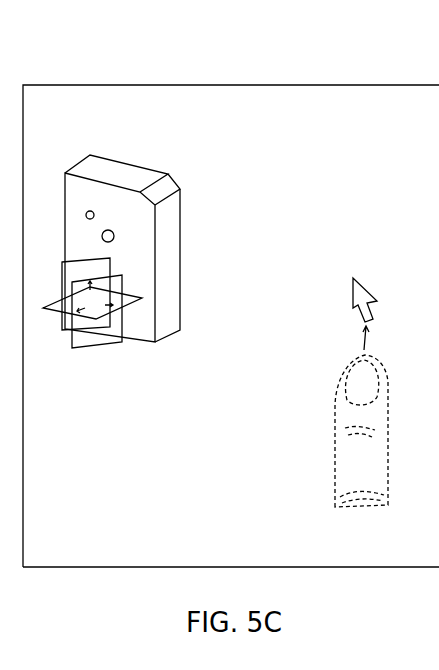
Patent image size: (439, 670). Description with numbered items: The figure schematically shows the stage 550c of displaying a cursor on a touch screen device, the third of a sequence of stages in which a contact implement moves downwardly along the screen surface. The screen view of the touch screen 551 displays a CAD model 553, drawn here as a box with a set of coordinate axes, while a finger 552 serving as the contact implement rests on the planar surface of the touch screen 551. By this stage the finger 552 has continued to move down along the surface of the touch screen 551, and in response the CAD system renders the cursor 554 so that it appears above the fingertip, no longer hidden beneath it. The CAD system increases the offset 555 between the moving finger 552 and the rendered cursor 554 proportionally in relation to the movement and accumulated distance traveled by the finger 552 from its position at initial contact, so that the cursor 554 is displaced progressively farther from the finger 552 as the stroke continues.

The stage 550c is at (82, 85).
The touch screen 551 is at (258, 97).
The finger 552 is at (335, 410).
The CAD model 553 is at (180, 220).
The cursor 554 is at (352, 288).
The offset 555 is at (364, 349).